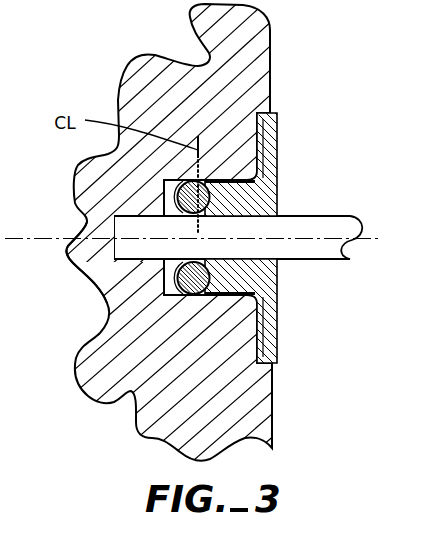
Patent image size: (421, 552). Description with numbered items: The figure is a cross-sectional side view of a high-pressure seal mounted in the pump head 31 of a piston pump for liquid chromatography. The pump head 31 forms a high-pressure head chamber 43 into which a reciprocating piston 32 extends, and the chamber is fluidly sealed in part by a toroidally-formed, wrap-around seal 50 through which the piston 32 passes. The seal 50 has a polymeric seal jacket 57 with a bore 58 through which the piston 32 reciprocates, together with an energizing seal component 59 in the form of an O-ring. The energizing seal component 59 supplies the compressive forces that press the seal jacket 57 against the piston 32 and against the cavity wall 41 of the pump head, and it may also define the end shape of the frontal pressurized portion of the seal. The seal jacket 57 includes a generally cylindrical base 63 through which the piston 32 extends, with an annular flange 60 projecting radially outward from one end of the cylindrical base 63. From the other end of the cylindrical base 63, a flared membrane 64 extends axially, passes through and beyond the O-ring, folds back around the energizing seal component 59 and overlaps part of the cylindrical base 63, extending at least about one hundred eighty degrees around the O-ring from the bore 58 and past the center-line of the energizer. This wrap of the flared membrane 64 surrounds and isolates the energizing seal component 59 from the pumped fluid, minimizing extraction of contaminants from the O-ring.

The pump head 31 is at (250, 58).
The piston 32 is at (312, 252).
The cavity wall 41 is at (163, 199).
The head chamber 43 is at (72, 251).
The seal 50 is at (201, 235).
The seal jacket 57 is at (294, 177).
The bore 58 is at (281, 222).
The energizing seal component 59 is at (213, 297).
The annular flange 60 is at (272, 340).
The cylindrical base 63 is at (274, 286).
The flared membrane 64 is at (163, 283).